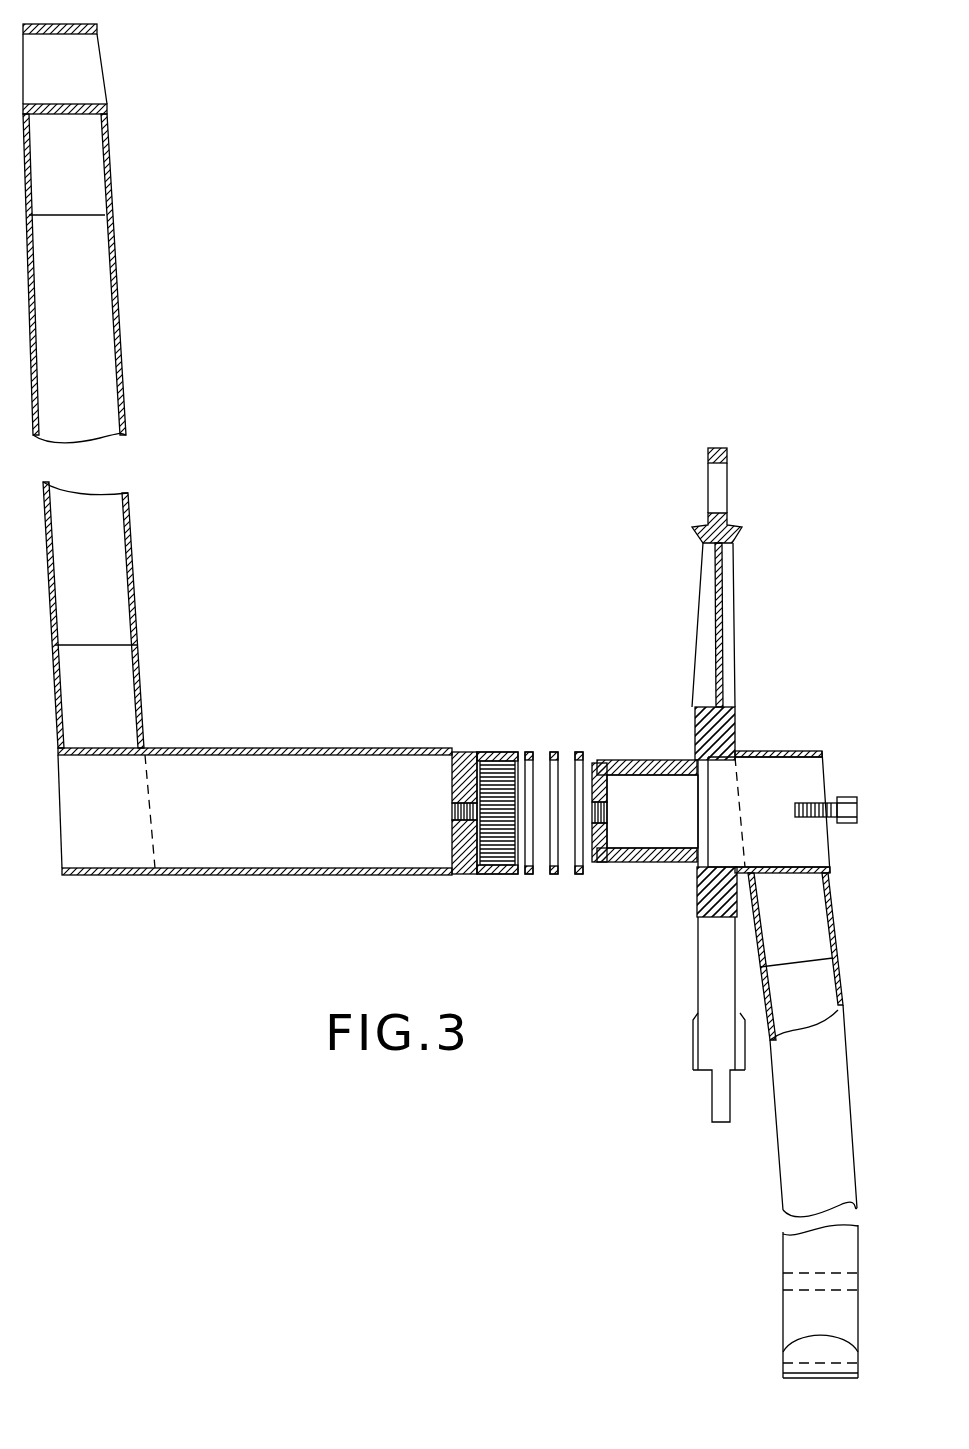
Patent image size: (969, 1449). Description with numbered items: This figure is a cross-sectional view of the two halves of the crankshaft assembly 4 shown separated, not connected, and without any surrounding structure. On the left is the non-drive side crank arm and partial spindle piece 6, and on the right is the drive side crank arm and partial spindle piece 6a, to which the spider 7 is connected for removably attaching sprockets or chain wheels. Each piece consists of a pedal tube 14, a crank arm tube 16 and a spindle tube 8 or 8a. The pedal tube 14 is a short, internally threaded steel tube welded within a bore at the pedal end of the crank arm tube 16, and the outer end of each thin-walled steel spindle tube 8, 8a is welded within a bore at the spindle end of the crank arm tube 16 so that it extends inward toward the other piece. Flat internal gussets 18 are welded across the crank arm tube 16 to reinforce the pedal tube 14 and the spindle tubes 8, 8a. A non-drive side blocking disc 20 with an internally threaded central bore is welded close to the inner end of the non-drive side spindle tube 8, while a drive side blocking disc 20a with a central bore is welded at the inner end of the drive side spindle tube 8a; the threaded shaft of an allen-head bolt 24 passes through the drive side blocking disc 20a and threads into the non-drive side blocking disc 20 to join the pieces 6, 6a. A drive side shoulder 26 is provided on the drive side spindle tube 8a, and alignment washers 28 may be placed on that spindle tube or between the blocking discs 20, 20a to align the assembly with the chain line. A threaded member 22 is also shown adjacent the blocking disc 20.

The crankshaft assembly 4 is at (767, 747).
The non-drive side crank arm and partial spindle piece 6 is at (140, 574).
The drive side crank arm and partial spindle piece 6a is at (778, 1184).
The spider 7 is at (732, 628).
The non-drive side spindle tube 8 is at (262, 878).
The drive side spindle tube 8a is at (618, 760).
The pedal tube 14 is at (107, 108).
The crank arm tube 16 is at (121, 331).
The internal gusset 18 is at (92, 192).
The non-drive side blocking disc 20 is at (452, 780).
The drive side blocking disc 20a is at (600, 847).
The threaded member 22 is at (467, 752).
The allen-head bolt 24 is at (846, 797).
The drive side shoulder 26 is at (696, 870).
The alignment washers 28 is at (579, 752).